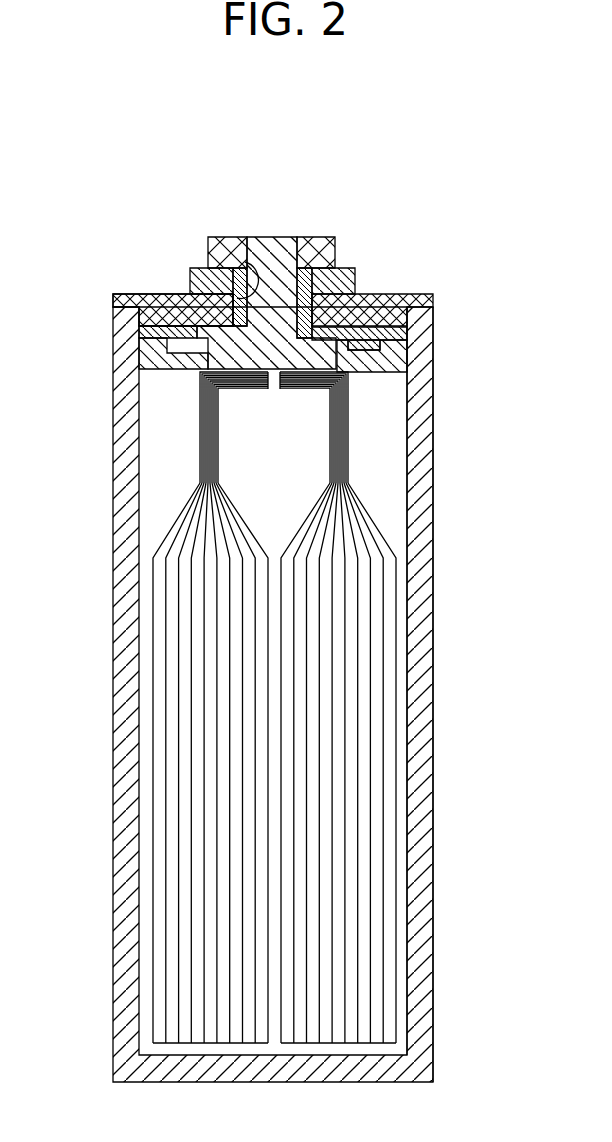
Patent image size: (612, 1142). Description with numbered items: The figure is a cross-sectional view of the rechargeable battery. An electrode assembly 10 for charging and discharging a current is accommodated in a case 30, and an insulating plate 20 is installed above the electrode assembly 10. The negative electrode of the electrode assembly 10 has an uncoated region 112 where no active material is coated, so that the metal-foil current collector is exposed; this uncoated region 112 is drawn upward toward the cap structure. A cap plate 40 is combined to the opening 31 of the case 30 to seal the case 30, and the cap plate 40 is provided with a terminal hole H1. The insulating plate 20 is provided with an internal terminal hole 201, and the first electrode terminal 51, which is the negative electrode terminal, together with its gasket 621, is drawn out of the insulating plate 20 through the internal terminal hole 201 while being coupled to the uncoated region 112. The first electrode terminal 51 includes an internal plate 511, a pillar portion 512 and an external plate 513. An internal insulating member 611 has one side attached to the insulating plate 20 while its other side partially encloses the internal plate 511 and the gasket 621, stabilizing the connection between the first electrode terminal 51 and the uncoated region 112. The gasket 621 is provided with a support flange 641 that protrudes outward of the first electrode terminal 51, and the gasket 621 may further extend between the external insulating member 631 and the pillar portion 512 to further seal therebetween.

The electrode assembly 10 is at (270, 707).
The uncoated region 112 is at (198, 437).
The insulating plate 20 is at (147, 330).
The internal terminal hole 201 is at (342, 317).
The case 30 is at (436, 646).
The opening 31 is at (402, 311).
The cap plate 40 is at (160, 296).
The first electrode terminal 51 is at (266, 244).
The internal plate 511 is at (228, 253).
The pillar portion 512 is at (277, 273).
The external plate 513 is at (316, 215).
The terminal hole H1 is at (245, 262).
The gasket 621 is at (304, 266).
The external insulating member 631 is at (344, 283).
The internal insulating member 611 is at (392, 355).
The support flange 641 is at (165, 370).